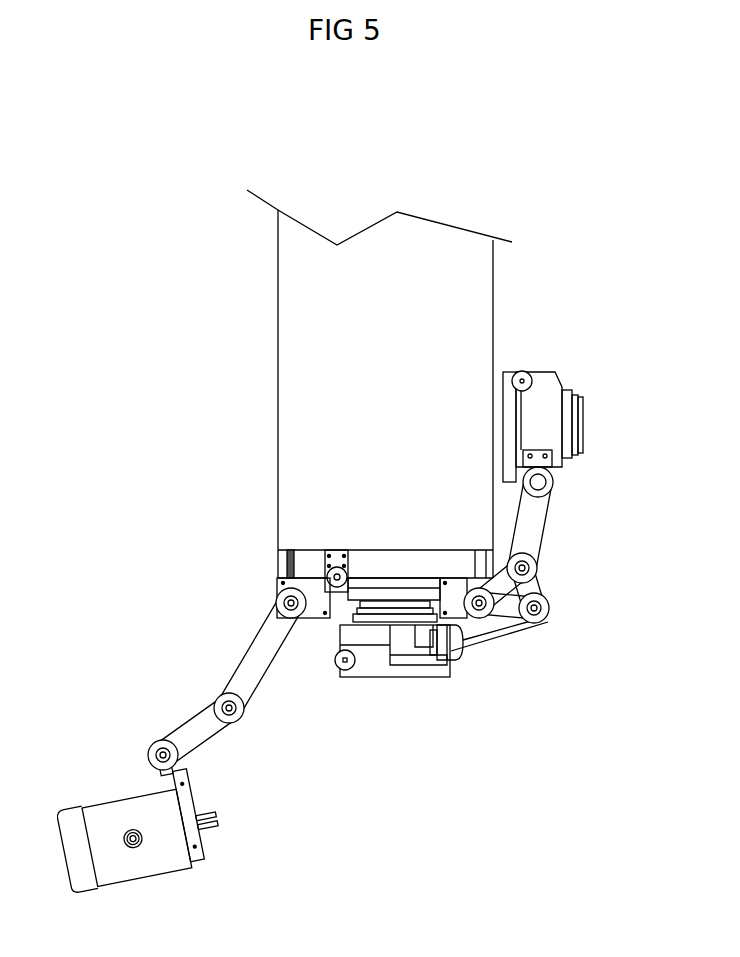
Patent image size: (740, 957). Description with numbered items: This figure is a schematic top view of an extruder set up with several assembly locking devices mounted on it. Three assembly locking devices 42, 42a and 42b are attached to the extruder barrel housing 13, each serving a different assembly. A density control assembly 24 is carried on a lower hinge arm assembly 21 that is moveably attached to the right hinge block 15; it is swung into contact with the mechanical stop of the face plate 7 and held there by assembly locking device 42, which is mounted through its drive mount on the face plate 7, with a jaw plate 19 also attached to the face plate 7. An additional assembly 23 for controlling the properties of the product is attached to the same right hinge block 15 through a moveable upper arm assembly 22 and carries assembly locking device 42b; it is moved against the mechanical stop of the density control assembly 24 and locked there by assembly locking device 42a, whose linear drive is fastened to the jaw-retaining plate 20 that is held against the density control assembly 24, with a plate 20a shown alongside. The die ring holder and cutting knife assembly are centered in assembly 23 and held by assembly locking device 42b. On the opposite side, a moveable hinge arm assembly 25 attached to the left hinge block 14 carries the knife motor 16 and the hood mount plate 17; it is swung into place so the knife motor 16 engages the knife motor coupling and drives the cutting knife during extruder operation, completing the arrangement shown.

The extruder barrel housing 13 is at (277, 355).
The face plate 7 is at (285, 563).
The assembly locking device 42 is at (334, 565).
The left hinge block 14 is at (277, 585).
The moveable hinge arm assembly 25 is at (222, 702).
The knife motor 16 is at (67, 808).
The hood mount plate 17 is at (188, 788).
The jaw-retaining plate 20 is at (387, 673).
The assembly locking device 42a is at (333, 660).
The lower hinge arm assembly 21 is at (498, 637).
The density control assembly 24 is at (448, 645).
The moveable upper arm assembly 22 is at (547, 522).
The right hinge block 15 is at (458, 590).
The additional assembly 23 is at (562, 460).
The plate 20a is at (508, 398).
The jaw plate 19 is at (522, 413).
The assembly locking device 42b is at (527, 368).